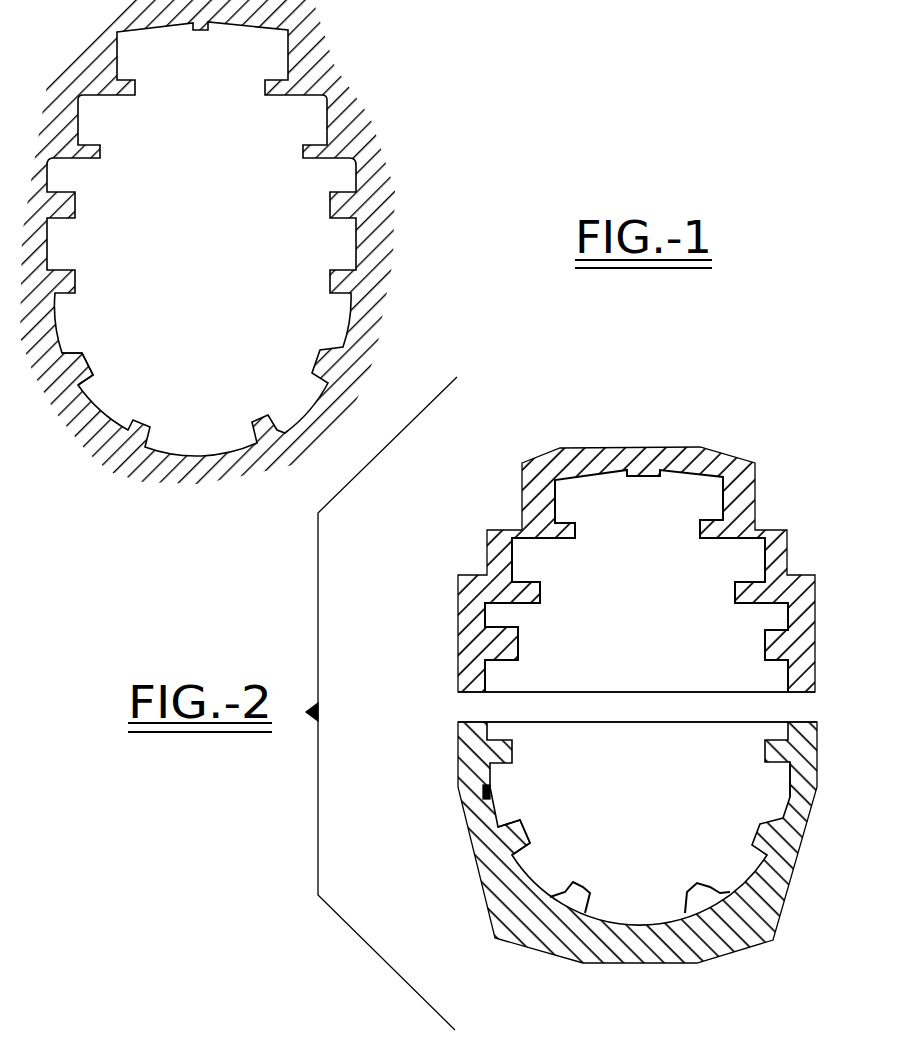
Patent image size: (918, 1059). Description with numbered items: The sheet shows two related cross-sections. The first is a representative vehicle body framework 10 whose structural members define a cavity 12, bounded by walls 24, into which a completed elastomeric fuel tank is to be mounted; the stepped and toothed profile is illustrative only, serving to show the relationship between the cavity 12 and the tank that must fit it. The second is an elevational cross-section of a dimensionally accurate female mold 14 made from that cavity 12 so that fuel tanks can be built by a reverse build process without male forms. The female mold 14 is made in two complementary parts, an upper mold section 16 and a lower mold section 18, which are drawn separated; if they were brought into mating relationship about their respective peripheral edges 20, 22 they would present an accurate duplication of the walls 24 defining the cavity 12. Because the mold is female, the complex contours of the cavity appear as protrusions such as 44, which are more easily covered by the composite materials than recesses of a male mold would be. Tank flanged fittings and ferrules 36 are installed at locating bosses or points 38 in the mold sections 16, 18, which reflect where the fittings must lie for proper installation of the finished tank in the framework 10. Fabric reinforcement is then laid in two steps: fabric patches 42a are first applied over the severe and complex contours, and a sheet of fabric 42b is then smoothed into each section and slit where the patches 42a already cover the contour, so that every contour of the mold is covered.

In FIG. 1, the vehicle body framework 10 is at (333, 67).
In FIG. 1, the cavity 12 is at (207, 198).
In FIG. 1, the walls 24 is at (103, 415).
In FIG. 2, the female mold 14 is at (623, 673).
In FIG. 2, the upper mold section 16 is at (533, 460).
In FIG. 2, the lower mold section 18 is at (512, 943).
In FIG. 2, the peripheral edge 20 is at (458, 692).
In FIG. 2, the peripheral edge 22 is at (480, 722).
In FIG. 2, the flanged fittings and ferrules 36 is at (492, 788).
In FIG. 2, the bosses or points 38 is at (773, 557).
In FIG. 2, the fabric patches 42a is at (697, 530).
In FIG. 2, the sheet fabric 42b is at (610, 470).
In FIG. 2, the protrusions 44 is at (548, 555).